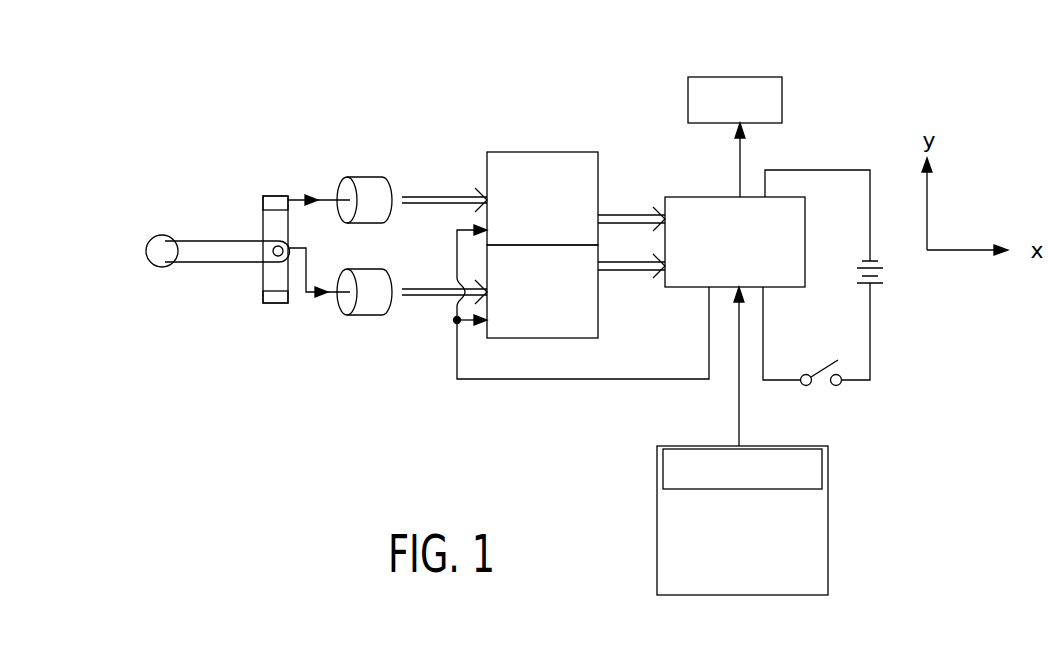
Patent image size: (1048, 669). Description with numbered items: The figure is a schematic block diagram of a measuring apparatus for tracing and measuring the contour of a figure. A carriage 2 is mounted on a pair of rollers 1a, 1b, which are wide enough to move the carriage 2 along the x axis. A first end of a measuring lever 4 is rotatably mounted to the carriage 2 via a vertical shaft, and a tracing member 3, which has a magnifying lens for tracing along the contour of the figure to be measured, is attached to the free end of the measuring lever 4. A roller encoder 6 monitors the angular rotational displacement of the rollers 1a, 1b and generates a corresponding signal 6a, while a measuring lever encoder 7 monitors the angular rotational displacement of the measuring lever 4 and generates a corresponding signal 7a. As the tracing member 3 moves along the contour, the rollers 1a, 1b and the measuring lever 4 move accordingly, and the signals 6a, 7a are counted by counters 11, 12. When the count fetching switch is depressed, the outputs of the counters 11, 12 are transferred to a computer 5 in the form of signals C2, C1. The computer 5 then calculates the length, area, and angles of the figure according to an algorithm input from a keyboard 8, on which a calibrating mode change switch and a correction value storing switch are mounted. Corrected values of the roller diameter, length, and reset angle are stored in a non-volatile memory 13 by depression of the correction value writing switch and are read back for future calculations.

The roller 1a is at (273, 195).
The roller 1b is at (273, 303).
The carriage 2 is at (262, 220).
The tracing member 3 is at (160, 268).
The measuring lever 4 is at (225, 262).
The computer 5 is at (790, 197).
The roller encoder 6 is at (375, 198).
The measuring lever encoder 7 is at (372, 314).
The signal 6a is at (435, 195).
The signal 7a is at (425, 300).
The keyboard 8 is at (828, 490).
The counter 11 is at (537, 150).
The counter 12 is at (538, 338).
The non-volatile memory 13 is at (735, 77).
The signal C1 is at (645, 274).
The signal C2 is at (618, 213).